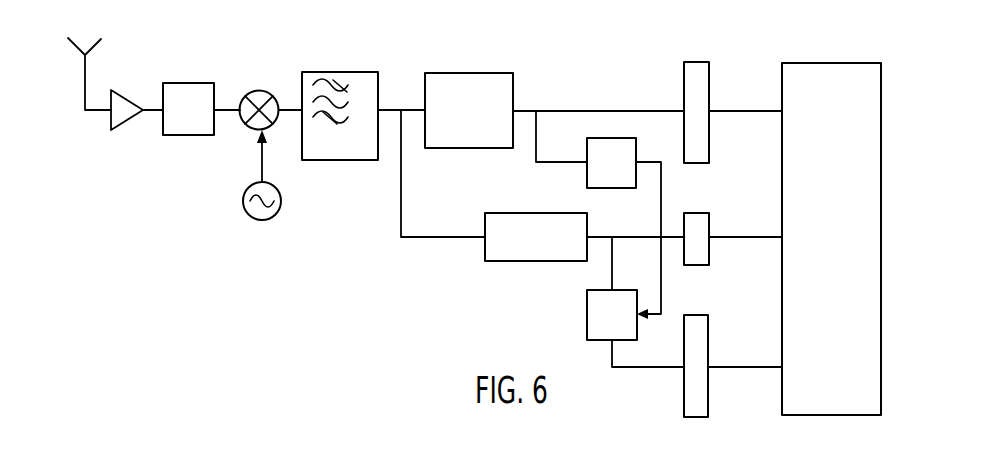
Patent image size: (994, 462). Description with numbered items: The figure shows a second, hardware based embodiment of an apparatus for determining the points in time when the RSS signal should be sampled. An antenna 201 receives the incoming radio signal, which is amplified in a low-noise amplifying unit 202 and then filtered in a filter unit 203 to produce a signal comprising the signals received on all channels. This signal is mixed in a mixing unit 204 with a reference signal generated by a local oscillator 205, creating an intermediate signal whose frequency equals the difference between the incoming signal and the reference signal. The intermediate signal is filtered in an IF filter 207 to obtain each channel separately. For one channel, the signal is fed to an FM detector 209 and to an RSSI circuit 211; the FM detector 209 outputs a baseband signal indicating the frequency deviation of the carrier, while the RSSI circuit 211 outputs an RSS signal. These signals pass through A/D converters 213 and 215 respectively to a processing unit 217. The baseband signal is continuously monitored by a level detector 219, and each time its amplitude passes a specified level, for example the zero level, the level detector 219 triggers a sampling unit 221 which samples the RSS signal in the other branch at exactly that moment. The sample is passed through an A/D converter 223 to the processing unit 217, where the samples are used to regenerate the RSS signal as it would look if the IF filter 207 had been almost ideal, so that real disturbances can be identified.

The antenna 201 is at (95, 48).
The low-noise amplifying unit 202 is at (125, 121).
The filter unit 203 is at (208, 121).
The mixing unit 204 is at (249, 93).
The local oscillator 205 is at (246, 192).
The IF filter 207 is at (355, 153).
The FM detector 209 is at (487, 122).
The RSSI circuit 211 is at (554, 251).
The A/D converter 213 is at (712, 139).
The A/D converter 215 is at (709, 216).
The processing unit 217 is at (847, 122).
The level detector 219 is at (630, 174).
The sampling unit 221 is at (630, 327).
The A/D converter 223 is at (709, 335).